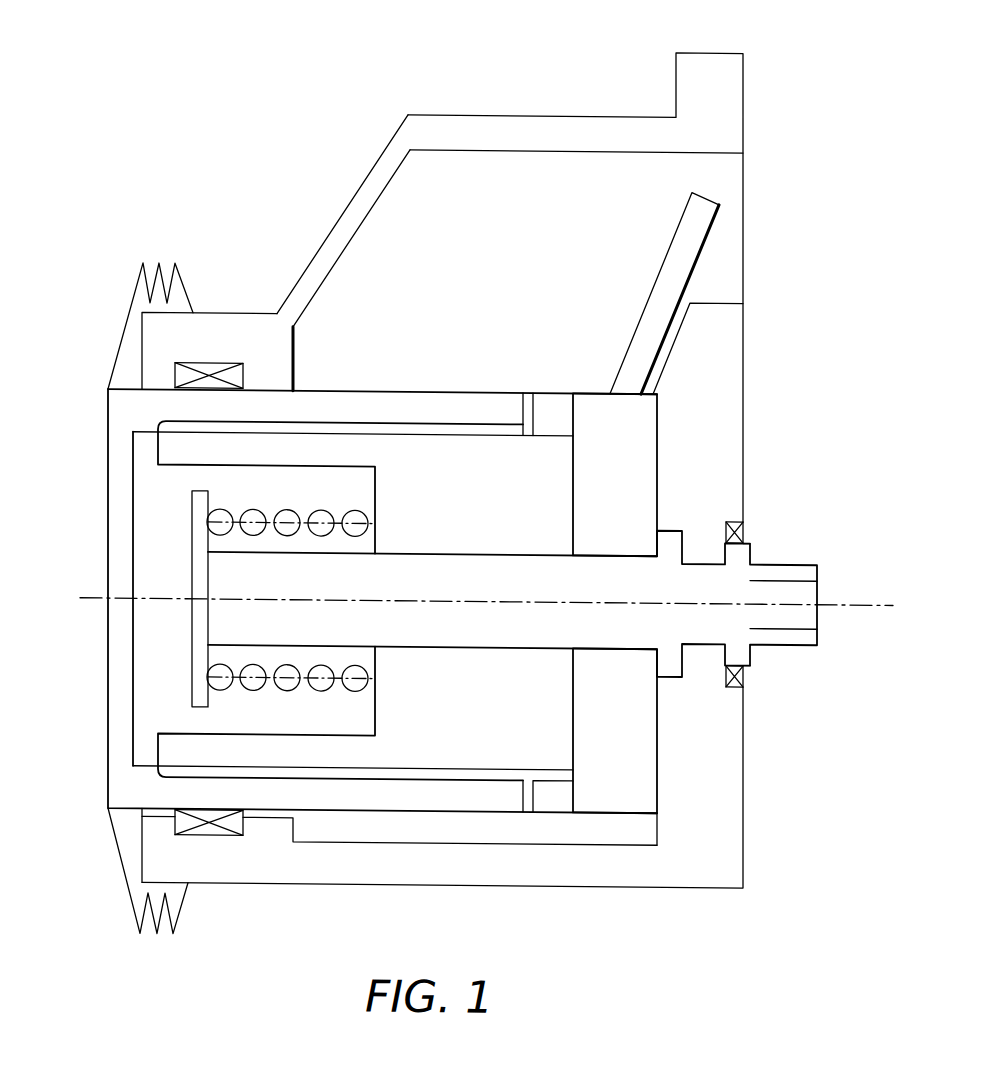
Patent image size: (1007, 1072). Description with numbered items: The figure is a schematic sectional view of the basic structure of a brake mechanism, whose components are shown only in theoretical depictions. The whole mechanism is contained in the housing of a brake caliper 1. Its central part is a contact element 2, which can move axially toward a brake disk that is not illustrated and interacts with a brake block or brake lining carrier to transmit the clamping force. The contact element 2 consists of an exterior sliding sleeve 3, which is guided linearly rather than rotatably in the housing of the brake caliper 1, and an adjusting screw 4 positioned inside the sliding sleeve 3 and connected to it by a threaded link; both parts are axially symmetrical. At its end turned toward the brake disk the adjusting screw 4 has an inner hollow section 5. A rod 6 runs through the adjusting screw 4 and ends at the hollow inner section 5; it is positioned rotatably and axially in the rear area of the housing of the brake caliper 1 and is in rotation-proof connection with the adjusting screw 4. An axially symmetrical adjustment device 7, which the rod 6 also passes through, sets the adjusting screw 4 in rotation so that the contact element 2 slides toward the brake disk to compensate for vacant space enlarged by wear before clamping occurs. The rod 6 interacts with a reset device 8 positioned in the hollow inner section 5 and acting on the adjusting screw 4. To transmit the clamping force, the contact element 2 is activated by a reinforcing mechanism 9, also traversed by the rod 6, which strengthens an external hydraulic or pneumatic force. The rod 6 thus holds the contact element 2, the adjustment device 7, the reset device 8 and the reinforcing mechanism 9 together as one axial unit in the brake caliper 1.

The brake caliper 1 is at (718, 84).
The contact element 2 is at (84, 471).
The sliding sleeve 3 is at (123, 776).
The adjusting screw 4 is at (450, 721).
The hollow inner section 5 is at (298, 492).
The rod 6 is at (703, 581).
The adjustment device 7 is at (548, 792).
The reset device 8 is at (283, 687).
The reinforcing mechanism 9 is at (623, 464).